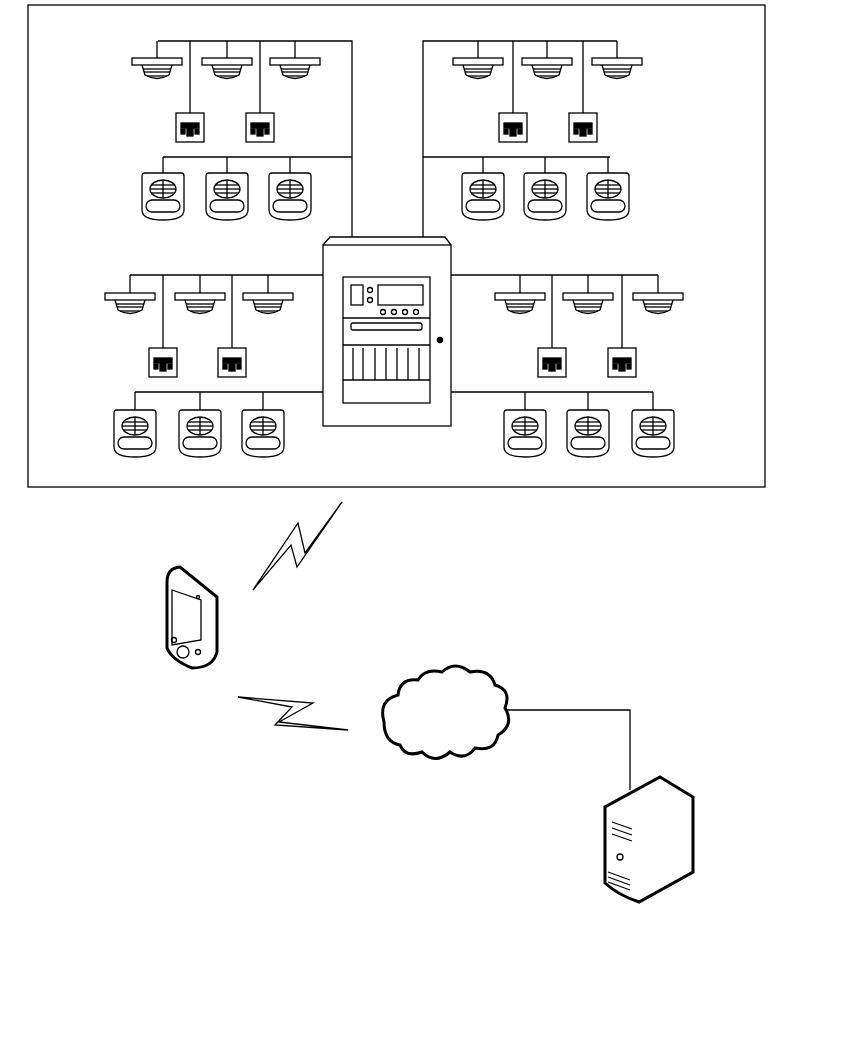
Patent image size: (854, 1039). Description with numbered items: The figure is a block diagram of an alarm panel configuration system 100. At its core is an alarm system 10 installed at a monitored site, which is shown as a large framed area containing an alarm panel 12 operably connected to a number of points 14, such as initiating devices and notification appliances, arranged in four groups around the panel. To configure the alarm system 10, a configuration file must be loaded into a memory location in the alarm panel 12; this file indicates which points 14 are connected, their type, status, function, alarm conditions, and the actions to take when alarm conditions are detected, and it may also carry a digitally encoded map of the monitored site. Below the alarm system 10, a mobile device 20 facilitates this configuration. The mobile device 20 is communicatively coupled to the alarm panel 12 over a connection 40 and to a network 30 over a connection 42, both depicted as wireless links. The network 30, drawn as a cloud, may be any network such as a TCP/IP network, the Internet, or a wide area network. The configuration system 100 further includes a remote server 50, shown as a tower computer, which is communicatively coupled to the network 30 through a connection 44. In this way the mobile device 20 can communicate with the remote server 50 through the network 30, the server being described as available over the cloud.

The configuration system 100 is at (641, 565).
The alarm system 10 is at (101, 40).
The alarm panel 12 is at (373, 227).
The points 14 is at (145, 97).
The mobile device 20 is at (153, 587).
The network 30 is at (425, 668).
The connection 40 is at (318, 565).
The connection 42 is at (302, 687).
The connection 44 is at (567, 703).
The remote server 50 is at (668, 767).